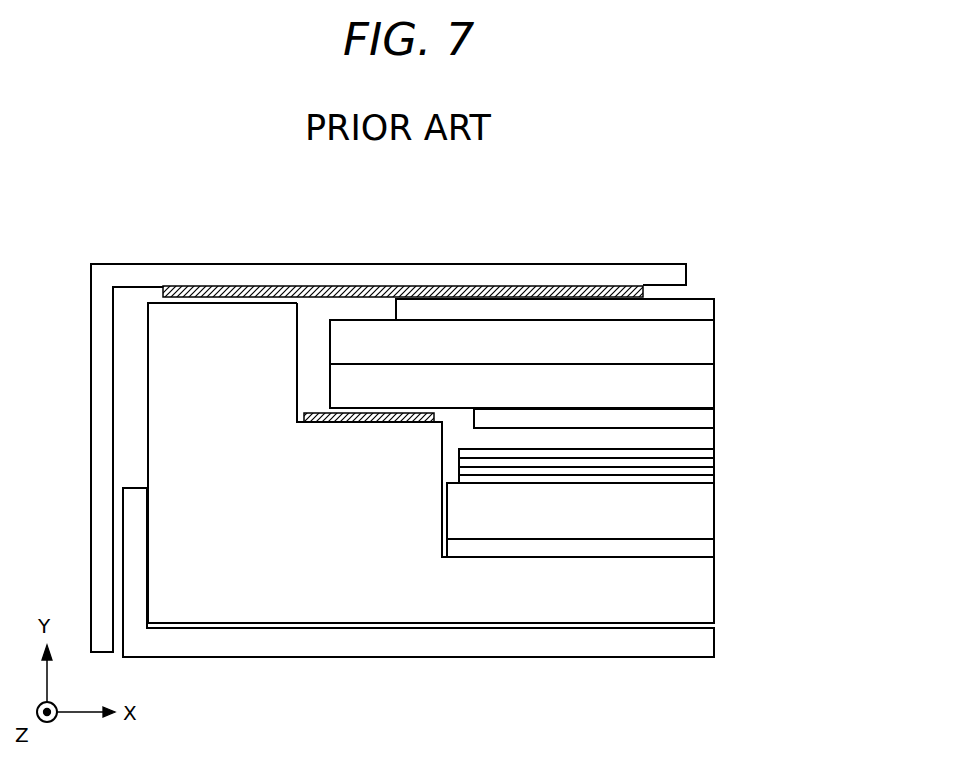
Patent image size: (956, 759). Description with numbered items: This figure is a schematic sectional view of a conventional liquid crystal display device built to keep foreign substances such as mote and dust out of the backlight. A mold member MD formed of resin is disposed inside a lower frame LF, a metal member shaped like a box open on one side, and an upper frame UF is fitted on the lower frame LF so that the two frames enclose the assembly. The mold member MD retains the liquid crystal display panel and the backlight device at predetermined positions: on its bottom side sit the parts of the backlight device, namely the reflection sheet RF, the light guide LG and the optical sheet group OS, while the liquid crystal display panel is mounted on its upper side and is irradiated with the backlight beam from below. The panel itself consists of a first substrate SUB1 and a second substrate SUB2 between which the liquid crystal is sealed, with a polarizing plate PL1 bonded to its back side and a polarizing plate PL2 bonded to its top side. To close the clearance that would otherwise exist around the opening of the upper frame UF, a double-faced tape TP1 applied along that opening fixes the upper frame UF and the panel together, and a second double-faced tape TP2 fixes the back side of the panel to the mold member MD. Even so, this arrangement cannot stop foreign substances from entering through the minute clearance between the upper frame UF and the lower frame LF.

The upper frame UF is at (670, 272).
The double-faced tape TP1 is at (318, 292).
The double-faced tape TP2 is at (319, 423).
The polarizing plate PL2 is at (702, 308).
The second substrate SUB2 is at (702, 343).
The first substrate SUB1 is at (702, 386).
The polarizing plate PL1 is at (702, 418).
The optical sheet group OS is at (722, 440).
The light guide LG is at (700, 508).
The reflection sheet RF is at (700, 545).
The mold member MD is at (700, 591).
The lower frame LF is at (700, 641).